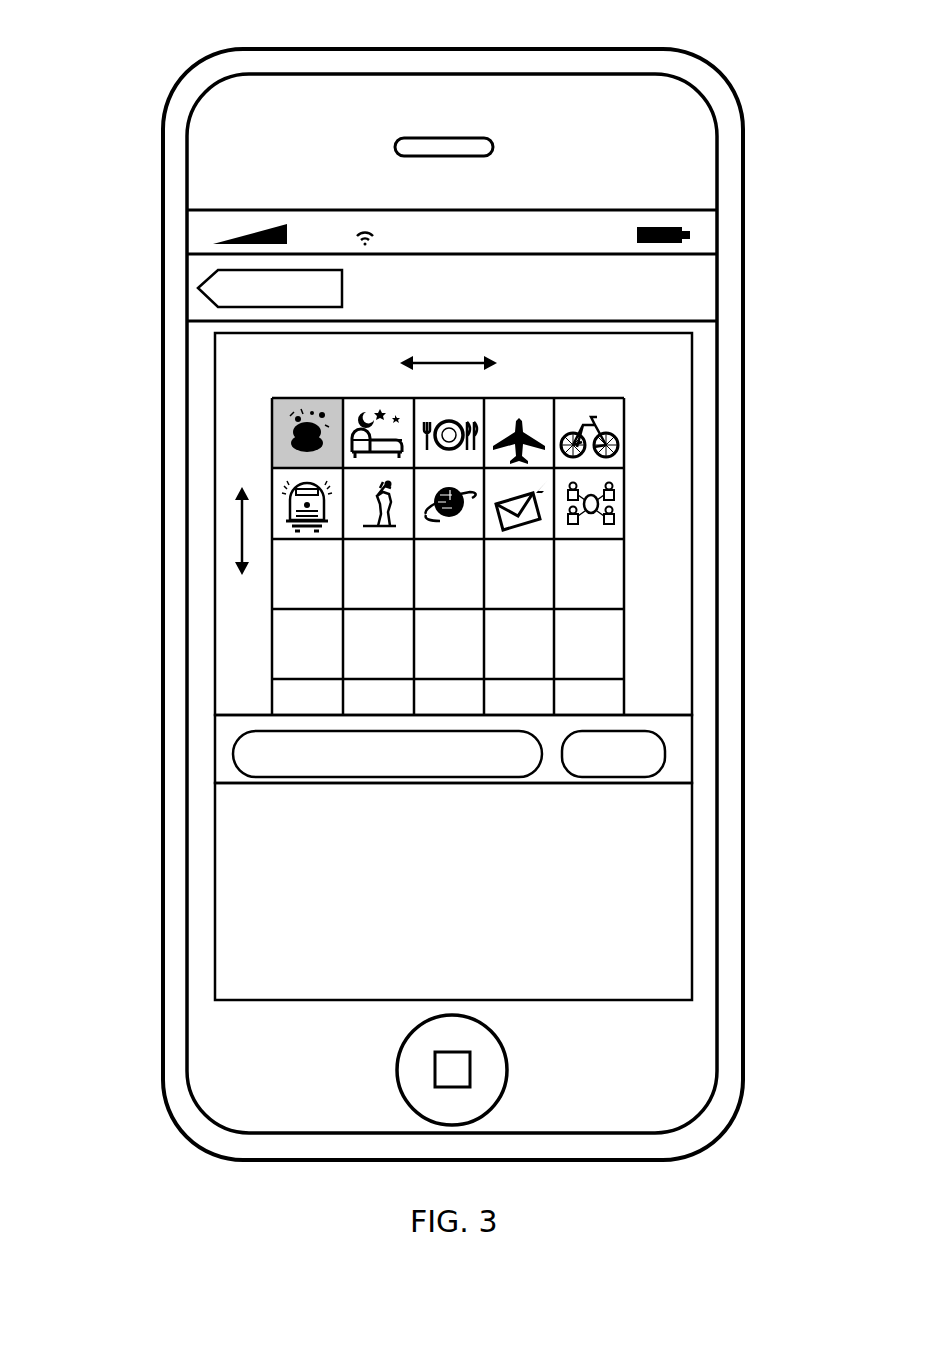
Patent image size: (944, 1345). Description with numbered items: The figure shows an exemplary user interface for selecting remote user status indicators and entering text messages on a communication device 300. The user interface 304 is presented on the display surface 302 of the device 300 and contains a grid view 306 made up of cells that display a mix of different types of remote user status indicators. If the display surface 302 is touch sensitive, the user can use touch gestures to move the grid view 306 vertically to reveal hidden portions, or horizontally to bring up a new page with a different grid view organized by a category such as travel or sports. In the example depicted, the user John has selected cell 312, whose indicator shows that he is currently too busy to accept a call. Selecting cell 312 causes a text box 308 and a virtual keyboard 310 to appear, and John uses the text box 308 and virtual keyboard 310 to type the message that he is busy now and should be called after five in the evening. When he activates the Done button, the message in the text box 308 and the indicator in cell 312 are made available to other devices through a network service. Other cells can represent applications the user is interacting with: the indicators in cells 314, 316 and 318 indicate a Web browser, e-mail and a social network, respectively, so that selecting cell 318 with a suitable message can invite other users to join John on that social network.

The communication device 300 is at (702, 58).
The display surface 302 is at (707, 772).
The user interface 304 is at (692, 377).
The grid view 306 is at (458, 556).
The text box 308 is at (233, 752).
The virtual keyboard 310 is at (260, 890).
The cell 312 is at (272, 433).
The cell 314 is at (445, 528).
The cell 316 is at (540, 528).
The cell 318 is at (617, 508).